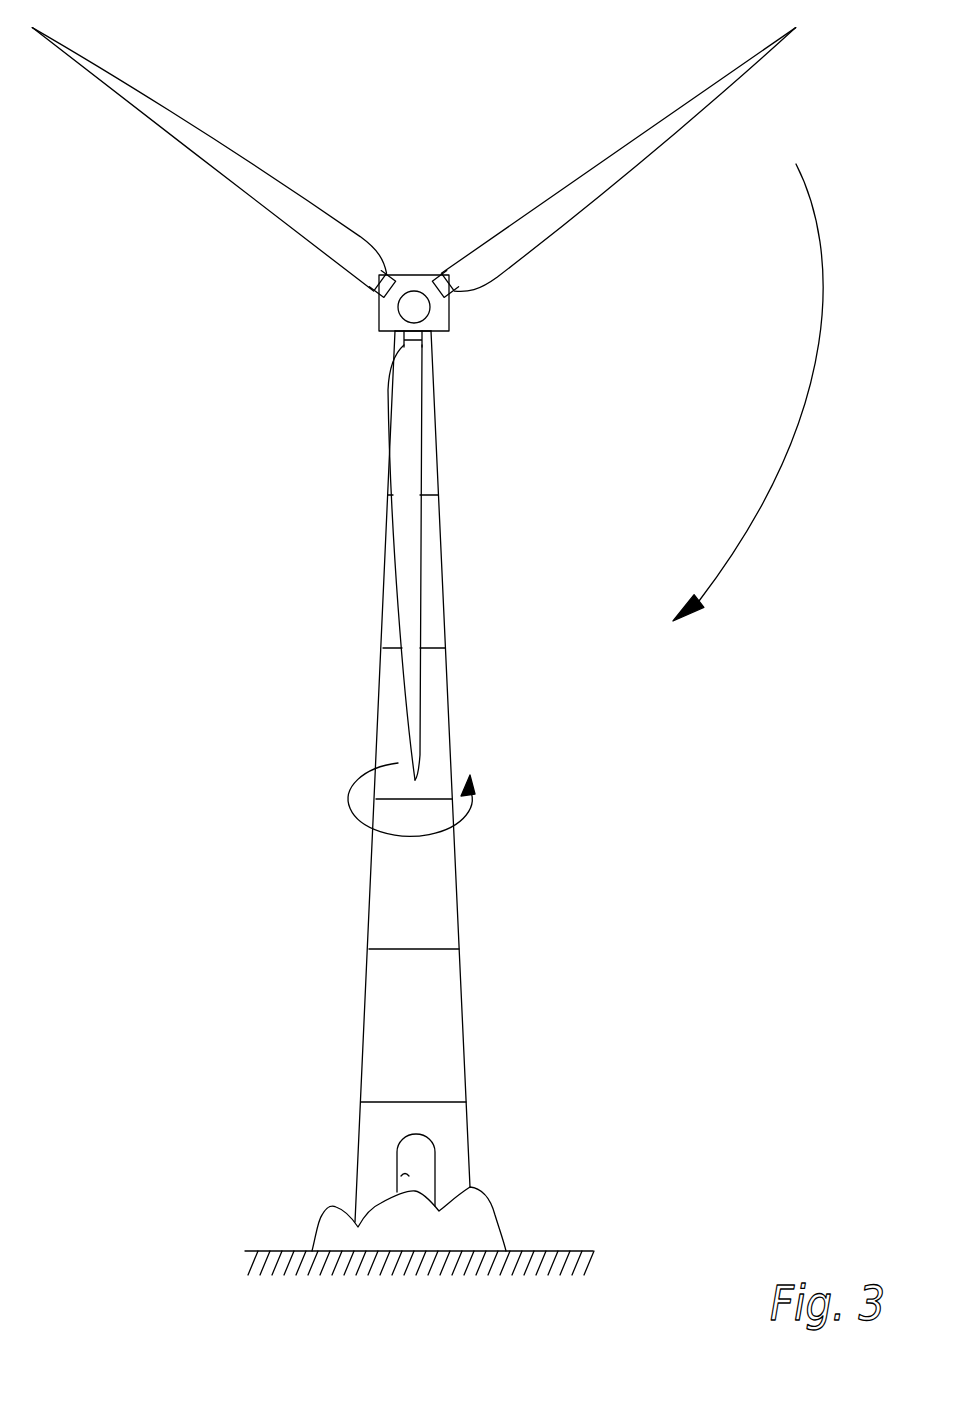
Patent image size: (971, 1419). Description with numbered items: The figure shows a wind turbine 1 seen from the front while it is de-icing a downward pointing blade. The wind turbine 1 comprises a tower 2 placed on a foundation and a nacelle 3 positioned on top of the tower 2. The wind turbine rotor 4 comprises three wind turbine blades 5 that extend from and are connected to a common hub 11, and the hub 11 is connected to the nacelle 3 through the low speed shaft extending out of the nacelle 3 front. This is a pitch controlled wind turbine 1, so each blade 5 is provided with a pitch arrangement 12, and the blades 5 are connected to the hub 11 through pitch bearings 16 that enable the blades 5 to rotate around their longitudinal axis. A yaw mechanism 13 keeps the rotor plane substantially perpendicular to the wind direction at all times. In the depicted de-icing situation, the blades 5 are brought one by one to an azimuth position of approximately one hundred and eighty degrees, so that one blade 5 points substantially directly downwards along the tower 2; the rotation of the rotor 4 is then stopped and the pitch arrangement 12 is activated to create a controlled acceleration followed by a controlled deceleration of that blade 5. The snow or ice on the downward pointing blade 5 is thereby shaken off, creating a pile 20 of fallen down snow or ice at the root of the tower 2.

The wind turbine 1 is at (348, 1035).
The tower 2 is at (447, 889).
The nacelle 3 is at (447, 332).
The wind turbine rotor 4 is at (403, 314).
The wind turbine blade 5 is at (415, 605).
The hub 11 is at (442, 306).
The pitch arrangement 12 is at (398, 277).
The yaw mechanism 13 is at (444, 333).
The pitch bearing 16 is at (433, 276).
The pile 20 is at (473, 1230).